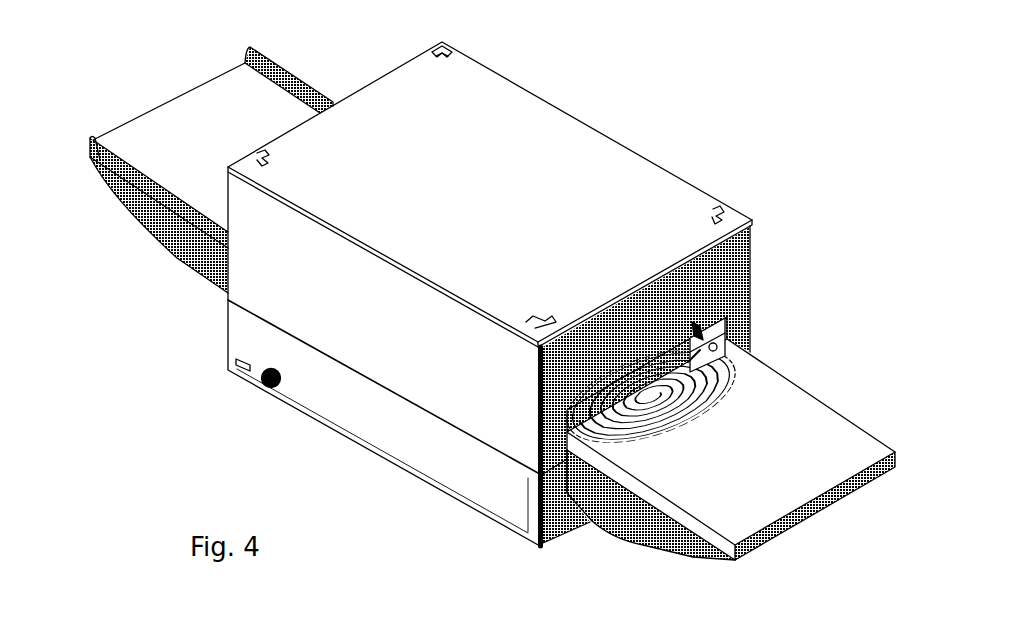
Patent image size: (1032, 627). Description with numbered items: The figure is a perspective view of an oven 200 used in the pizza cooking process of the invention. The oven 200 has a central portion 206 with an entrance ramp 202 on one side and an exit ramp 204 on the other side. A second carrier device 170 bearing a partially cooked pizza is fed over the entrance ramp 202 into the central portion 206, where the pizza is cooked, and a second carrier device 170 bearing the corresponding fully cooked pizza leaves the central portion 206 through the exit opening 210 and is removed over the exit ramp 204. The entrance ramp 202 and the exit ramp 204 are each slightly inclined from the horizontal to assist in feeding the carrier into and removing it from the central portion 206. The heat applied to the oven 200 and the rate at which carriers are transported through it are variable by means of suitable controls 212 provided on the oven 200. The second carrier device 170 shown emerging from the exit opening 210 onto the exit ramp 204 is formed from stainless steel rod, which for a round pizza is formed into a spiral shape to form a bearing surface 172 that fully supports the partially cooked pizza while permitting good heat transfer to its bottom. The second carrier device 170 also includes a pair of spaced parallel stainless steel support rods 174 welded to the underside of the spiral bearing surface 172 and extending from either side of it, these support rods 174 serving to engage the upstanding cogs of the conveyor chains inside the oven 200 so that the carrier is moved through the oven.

The oven 200 is at (567, 213).
The entrance ramp 202 is at (197, 157).
The exit ramp 204 is at (670, 480).
The central portion 206 is at (500, 172).
The exit opening 210 is at (640, 400).
The controls 212 is at (253, 375).
The second carrier device 170 is at (728, 408).
The bearing surface 172 is at (672, 440).
The support rods 174 is at (737, 362).